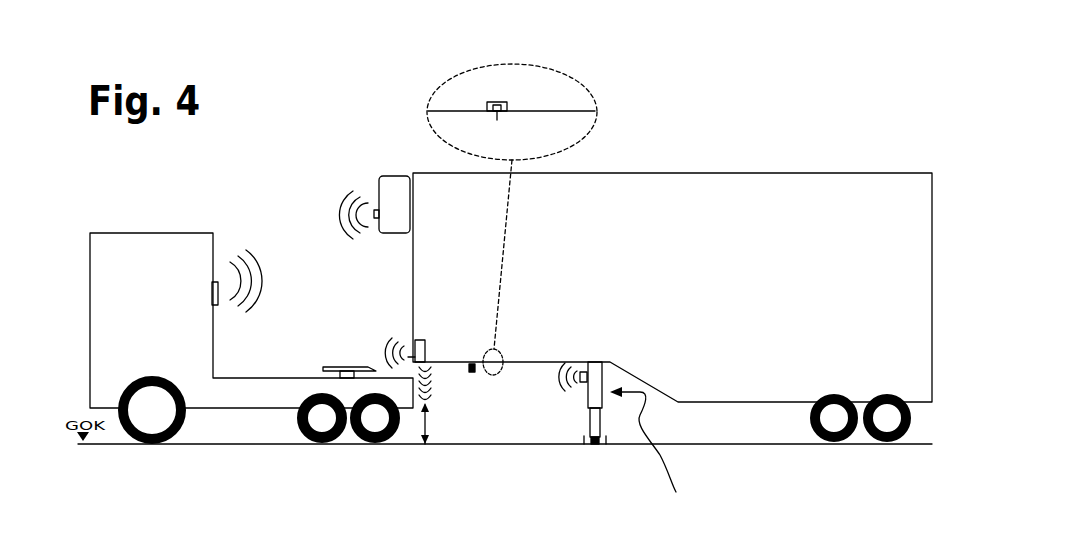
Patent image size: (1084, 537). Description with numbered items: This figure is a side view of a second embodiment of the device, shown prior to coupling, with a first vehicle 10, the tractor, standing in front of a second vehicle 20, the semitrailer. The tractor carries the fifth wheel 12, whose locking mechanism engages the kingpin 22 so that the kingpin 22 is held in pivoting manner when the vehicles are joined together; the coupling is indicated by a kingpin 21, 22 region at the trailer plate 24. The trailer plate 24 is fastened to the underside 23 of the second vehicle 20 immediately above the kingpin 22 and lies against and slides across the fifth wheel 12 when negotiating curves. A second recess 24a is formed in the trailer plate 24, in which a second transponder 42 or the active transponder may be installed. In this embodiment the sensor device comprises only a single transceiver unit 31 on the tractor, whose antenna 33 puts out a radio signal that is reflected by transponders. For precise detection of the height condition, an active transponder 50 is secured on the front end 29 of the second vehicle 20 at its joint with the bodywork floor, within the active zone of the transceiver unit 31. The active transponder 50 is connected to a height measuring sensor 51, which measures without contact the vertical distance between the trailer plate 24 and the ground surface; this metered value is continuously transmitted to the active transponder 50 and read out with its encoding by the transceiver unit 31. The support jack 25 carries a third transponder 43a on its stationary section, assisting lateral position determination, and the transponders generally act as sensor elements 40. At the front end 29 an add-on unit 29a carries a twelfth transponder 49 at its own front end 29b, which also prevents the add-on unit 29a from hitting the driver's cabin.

The first vehicle 10 is at (142, 277).
The fifth wheel 12 is at (343, 365).
The second vehicle 20 is at (900, 224).
The king pin 21 is at (471, 439).
The kingpin 22 is at (472, 370).
The underside 23 is at (505, 368).
The trailer plate 24 is at (508, 90).
The second recess 24a is at (507, 102).
The support jack 25 is at (650, 455).
The front end 29 is at (340, 189).
The add-on unit 29a is at (398, 176).
The front end of add-on unit 29b is at (378, 207).
The transceiver unit 31 is at (213, 266).
The antenna 33 is at (220, 305).
The sensor 40 is at (480, 400).
The second transponder 42 is at (497, 120).
The third transponder 43a is at (580, 384).
The twelfth transponder 49 is at (340, 175).
The active transponder 50 is at (413, 357).
The height measuring sensor 51 is at (450, 444).